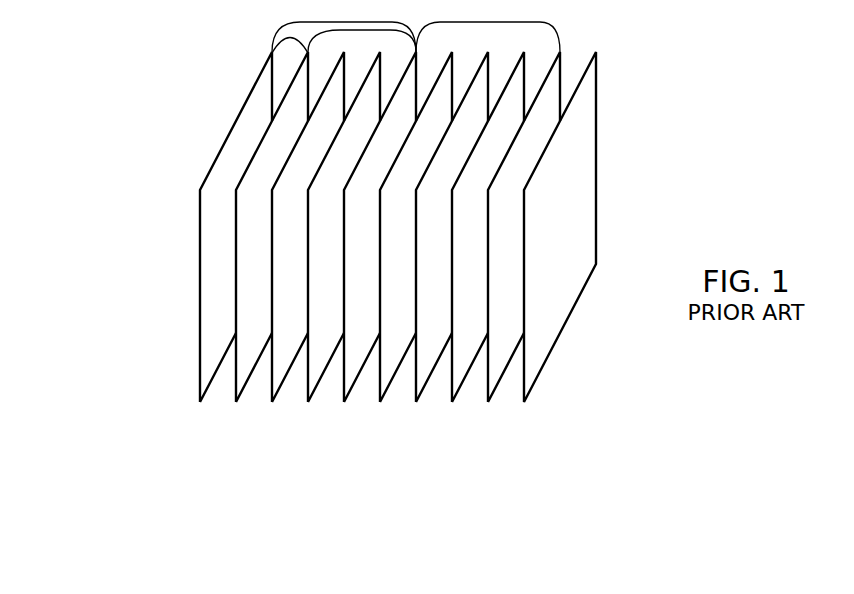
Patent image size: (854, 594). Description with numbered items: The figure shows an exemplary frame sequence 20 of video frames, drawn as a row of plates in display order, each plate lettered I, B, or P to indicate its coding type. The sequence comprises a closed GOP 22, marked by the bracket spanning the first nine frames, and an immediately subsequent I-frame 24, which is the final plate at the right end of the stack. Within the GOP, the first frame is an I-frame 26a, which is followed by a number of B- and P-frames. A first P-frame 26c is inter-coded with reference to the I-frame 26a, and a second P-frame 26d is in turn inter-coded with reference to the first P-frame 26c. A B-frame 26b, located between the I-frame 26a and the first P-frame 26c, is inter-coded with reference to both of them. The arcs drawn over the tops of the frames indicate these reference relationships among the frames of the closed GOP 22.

The frame sequence 20 is at (100, 200).
The closed GOP 22 is at (202, 465).
The I-frame 24 is at (596, 105).
The I-frame 26a is at (200, 378).
The B-frame 26b is at (236, 388).
The first P-frame 26c is at (344, 388).
The second P-frame 26d is at (486, 386).